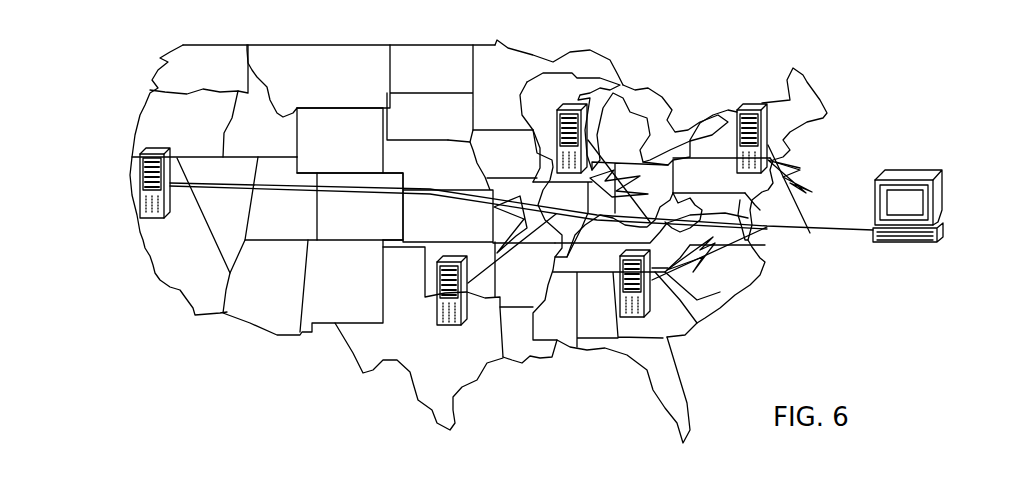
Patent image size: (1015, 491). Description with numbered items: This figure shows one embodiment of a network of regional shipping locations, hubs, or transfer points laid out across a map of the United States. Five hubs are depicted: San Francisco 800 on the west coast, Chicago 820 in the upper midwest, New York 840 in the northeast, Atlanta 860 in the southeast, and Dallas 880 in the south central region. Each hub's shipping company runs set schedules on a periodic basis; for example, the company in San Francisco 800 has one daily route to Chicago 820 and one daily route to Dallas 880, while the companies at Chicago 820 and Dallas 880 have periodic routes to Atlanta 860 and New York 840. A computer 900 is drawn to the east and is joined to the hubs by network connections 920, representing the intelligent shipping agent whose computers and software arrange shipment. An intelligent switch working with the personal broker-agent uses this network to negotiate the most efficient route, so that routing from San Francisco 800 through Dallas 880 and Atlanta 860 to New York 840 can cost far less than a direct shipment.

The San Francisco shipping location 800 is at (150, 223).
The Chicago shipping location 820 is at (557, 115).
The New York shipping location 840 is at (752, 103).
The Atlanta shipping location 860 is at (655, 303).
The Dallas shipping location 880 is at (448, 327).
The client computer 900 is at (910, 242).
The network connections 920 is at (784, 234).